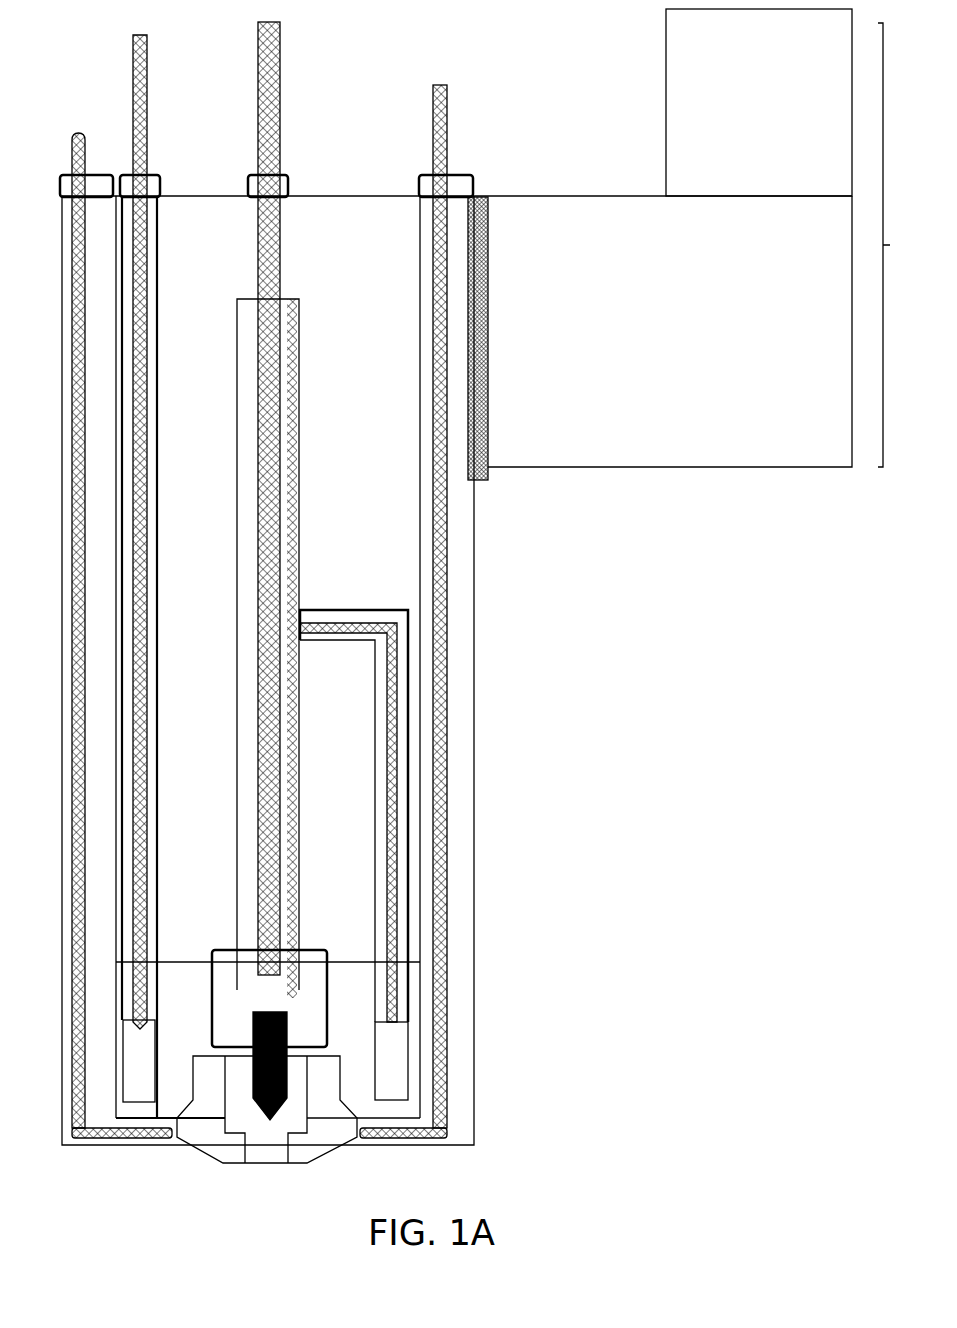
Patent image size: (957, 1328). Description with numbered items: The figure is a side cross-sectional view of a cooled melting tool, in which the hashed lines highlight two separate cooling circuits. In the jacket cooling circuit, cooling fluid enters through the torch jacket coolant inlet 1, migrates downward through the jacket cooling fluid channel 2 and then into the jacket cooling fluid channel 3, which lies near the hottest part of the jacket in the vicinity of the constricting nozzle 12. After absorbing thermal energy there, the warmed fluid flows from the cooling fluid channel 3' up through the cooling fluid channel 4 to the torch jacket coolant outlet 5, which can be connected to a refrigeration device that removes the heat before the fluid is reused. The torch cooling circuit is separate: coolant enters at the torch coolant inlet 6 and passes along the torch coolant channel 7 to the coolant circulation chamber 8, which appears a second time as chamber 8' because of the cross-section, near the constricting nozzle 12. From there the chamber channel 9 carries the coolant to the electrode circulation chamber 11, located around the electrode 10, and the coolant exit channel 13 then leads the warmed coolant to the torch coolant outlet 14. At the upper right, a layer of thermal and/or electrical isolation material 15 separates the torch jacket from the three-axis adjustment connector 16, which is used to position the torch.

The torch jacket coolant inlet 1 is at (78, 167).
The jacket cooling fluid channel 2 is at (100, 282).
The jacket cooling fluid channel 3 is at (122, 1162).
The cooling fluid channel 3' is at (422, 1156).
The jacket cooling fluid channel 4 is at (474, 730).
The torch jacket coolant outlet 5 is at (447, 188).
The torch coolant inlet 6 is at (143, 186).
The torch coolant channel 7 is at (152, 348).
The coolant circulation chamber 8 is at (79, 1034).
The coolant circulation chamber 8' is at (455, 1044).
The chamber channel 9 is at (372, 613).
The electrode 10 is at (252, 1062).
The electrode circulation chamber 11 is at (313, 980).
The constricting nozzle 12 is at (303, 1150).
The coolant exit channel 13 is at (292, 440).
The torch coolant outlet 14 is at (270, 188).
The thermal and/or electrical isolation material 15 is at (482, 478).
The three-axis adjustment connector 16 is at (704, 238).